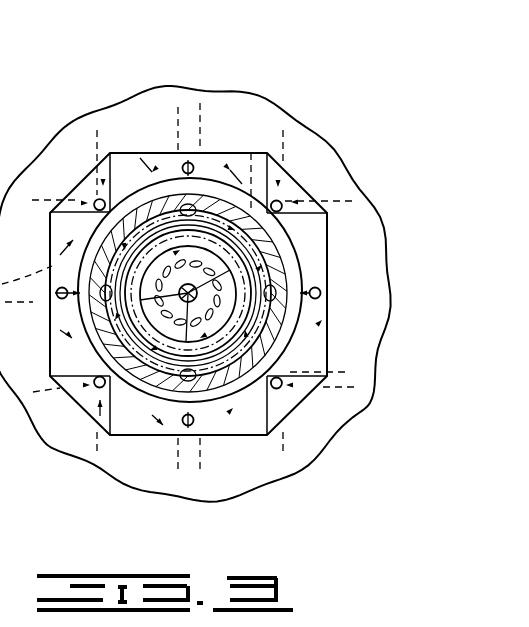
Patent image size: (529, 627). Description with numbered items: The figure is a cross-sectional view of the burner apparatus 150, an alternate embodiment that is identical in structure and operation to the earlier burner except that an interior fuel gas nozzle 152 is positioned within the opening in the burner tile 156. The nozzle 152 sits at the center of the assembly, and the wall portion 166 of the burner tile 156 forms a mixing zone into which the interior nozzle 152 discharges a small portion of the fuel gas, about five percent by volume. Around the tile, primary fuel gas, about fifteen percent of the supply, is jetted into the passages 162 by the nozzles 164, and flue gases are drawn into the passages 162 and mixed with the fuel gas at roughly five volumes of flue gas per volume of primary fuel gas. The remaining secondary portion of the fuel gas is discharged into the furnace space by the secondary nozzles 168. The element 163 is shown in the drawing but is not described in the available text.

The burner apparatus 150 is at (234, 62).
The interior fuel gas nozzle 152 is at (195, 292).
The burner tile 156 is at (300, 350).
The passages 162 is at (100, 229).
The perforated disk 163 is at (217, 262).
The nozzles 164 is at (97, 199).
The wall portion 166 is at (130, 205).
The secondary nozzles 168 is at (191, 163).